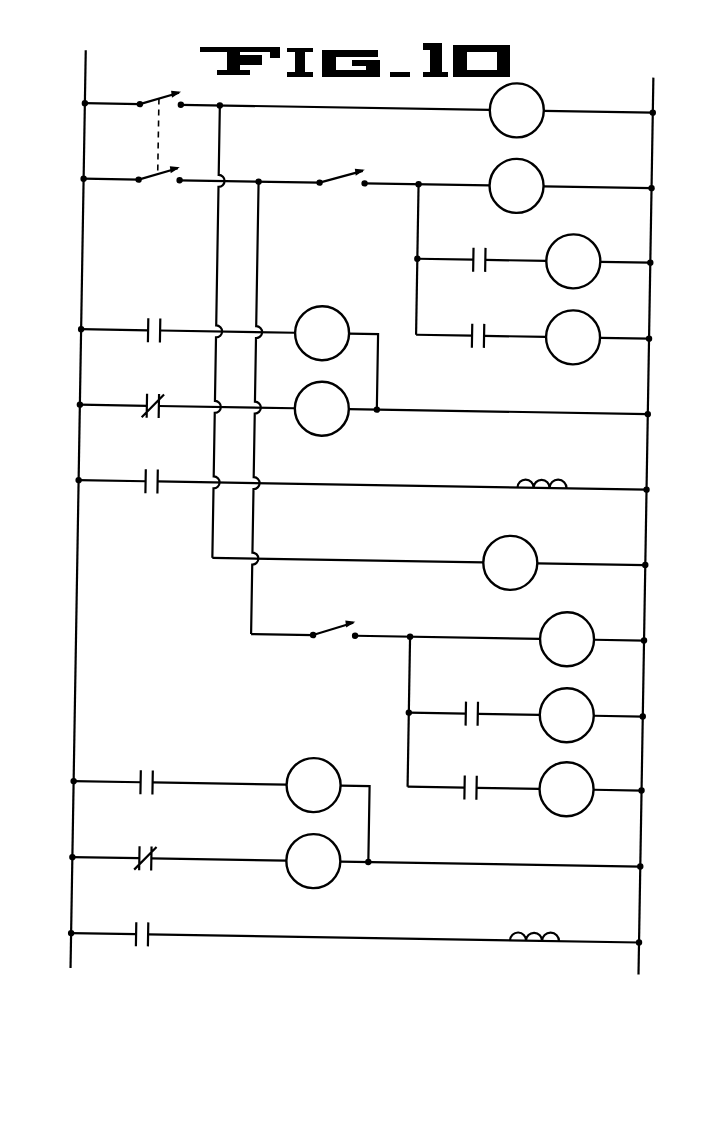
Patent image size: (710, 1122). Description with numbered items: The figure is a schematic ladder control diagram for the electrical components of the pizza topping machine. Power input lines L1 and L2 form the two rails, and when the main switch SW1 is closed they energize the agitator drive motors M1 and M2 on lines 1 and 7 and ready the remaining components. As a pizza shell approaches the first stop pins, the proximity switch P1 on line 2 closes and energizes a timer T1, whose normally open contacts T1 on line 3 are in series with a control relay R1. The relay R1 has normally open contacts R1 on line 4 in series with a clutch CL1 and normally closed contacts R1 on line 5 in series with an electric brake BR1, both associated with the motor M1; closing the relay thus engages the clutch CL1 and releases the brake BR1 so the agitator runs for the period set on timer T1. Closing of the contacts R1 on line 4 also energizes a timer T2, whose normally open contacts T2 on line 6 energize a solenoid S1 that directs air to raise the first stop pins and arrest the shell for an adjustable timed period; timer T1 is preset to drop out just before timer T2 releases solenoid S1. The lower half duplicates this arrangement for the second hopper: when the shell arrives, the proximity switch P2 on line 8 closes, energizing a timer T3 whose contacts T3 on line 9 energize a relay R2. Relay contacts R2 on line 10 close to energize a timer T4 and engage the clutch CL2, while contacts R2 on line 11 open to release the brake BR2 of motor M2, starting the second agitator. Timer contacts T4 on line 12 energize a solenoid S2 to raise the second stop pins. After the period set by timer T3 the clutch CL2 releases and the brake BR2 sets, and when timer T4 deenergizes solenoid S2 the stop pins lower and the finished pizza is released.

The power input line L1 is at (78, 69).
The power input line L2 is at (646, 86).
The main switch SW1 is at (160, 188).
The proximity switch P1 is at (338, 173).
The proximity switch P2 is at (329, 626).
The agitator drive motor M1 is at (496, 119).
The timer T1 is at (498, 194).
The control relay R1 is at (556, 269).
The timer T2 is at (557, 345).
The clutch CL1 is at (302, 345).
The electric brake BR1 is at (303, 420).
The solenoid S1 is at (559, 483).
The agitator drive motor M2 is at (497, 572).
The timer T3 is at (556, 647).
The relay R2 is at (557, 723).
The timer T4 is at (558, 797).
The clutch CL2 is at (301, 797).
The brake BR2 is at (302, 873).
The solenoid S2 is at (538, 934).
The line 1 is at (379, 108).
The line 2 is at (378, 184).
The line 3 is at (544, 261).
The line 4 is at (375, 367).
The line 5 is at (374, 410).
The line 6 is at (373, 485).
The line 7 is at (440, 562).
The line 8 is at (459, 638).
The line 9 is at (536, 715).
The line 10 is at (373, 819).
The line 11 is at (373, 862).
The line 12 is at (372, 938).